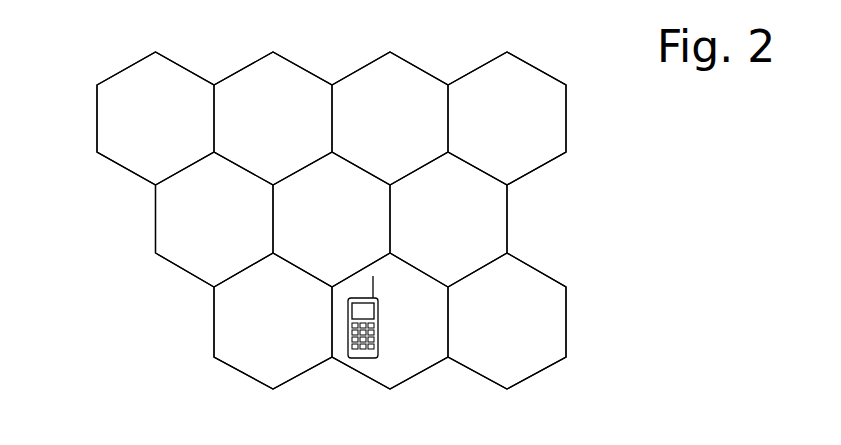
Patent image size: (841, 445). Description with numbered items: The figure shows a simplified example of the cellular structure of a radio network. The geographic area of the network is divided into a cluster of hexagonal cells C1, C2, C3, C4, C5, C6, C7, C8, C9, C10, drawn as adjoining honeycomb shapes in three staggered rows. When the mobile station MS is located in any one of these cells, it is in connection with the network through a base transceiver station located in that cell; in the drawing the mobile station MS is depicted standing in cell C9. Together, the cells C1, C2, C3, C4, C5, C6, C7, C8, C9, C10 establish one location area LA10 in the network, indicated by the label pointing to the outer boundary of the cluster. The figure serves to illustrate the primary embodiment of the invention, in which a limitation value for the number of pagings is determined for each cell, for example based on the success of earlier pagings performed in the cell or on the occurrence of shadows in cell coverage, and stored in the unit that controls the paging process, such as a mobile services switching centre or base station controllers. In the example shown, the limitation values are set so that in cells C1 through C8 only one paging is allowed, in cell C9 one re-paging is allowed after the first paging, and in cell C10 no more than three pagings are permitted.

The location area LA10 is at (113, 72).
The cell C1 is at (177, 83).
The cell C2 is at (304, 80).
The cell C3 is at (408, 80).
The cell C4 is at (533, 87).
The cell C5 is at (173, 247).
The cell C6 is at (331, 219).
The cell C7 is at (490, 221).
The cell C8 is at (245, 353).
The cell C9 is at (397, 375).
The cell C10 is at (545, 315).
The mobile station MS is at (379, 303).